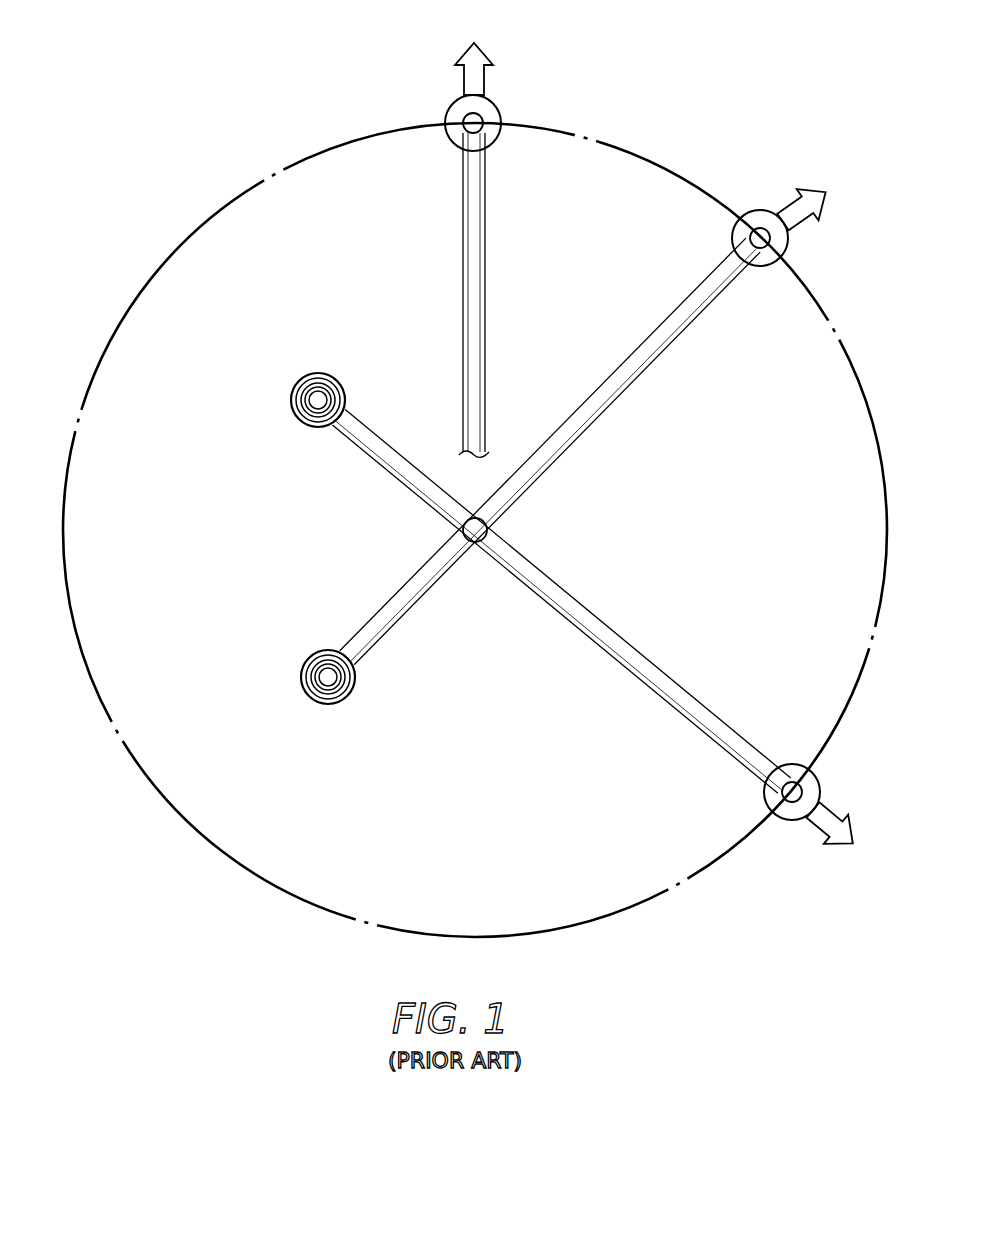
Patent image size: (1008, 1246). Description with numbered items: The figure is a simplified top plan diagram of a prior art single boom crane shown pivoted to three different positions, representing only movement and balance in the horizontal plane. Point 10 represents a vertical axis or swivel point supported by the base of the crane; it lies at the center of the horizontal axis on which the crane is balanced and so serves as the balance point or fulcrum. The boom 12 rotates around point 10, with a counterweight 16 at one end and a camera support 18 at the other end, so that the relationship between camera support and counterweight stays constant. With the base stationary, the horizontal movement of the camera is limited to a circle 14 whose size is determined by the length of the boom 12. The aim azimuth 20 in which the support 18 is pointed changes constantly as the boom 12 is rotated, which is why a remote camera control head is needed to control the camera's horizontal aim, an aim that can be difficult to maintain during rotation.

The swivel point 10 is at (479, 525).
The boom 12 is at (487, 242).
The circle 14 is at (823, 303).
The counterweight 16 is at (330, 375).
The camera support 18 is at (500, 112).
The aim azimuth 20 is at (487, 78).